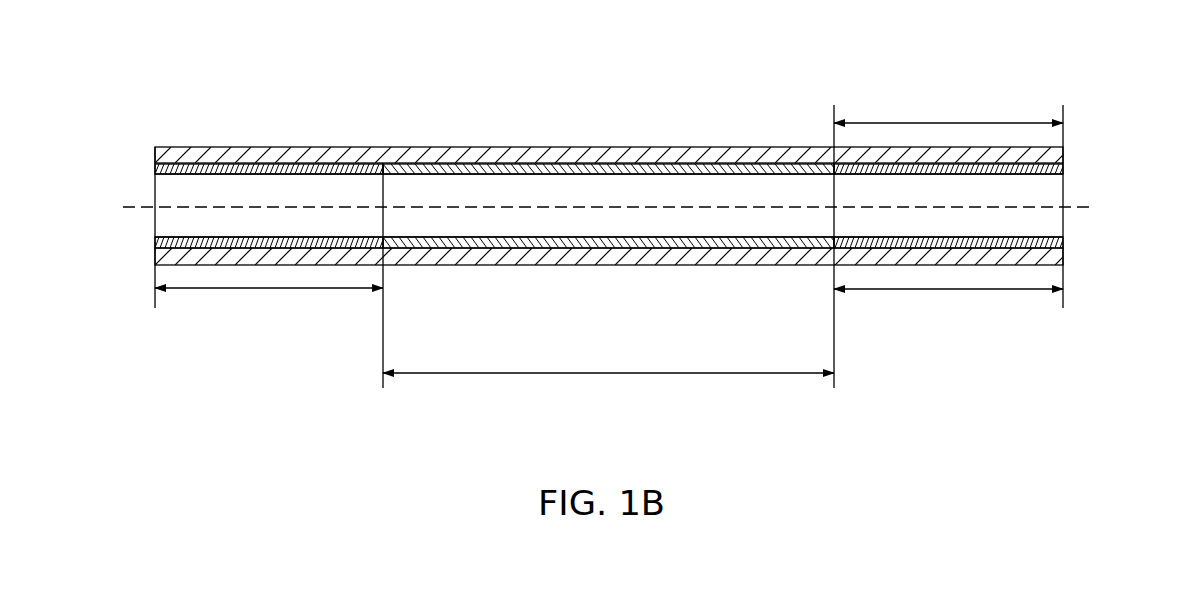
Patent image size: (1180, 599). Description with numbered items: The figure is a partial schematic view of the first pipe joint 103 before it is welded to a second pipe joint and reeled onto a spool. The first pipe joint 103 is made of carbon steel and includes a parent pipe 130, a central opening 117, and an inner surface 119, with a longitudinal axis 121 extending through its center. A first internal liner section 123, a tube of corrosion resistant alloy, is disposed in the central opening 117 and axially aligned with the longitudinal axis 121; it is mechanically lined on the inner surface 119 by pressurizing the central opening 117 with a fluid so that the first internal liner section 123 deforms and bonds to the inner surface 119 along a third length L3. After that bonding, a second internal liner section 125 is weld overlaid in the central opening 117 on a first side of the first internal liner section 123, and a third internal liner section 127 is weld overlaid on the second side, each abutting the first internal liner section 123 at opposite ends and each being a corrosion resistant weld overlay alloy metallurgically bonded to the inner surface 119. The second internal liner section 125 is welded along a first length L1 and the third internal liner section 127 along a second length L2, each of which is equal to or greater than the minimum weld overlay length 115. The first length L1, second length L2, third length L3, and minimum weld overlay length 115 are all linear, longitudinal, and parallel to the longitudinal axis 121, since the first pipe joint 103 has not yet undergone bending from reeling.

The first pipe joint 103 is at (369, 69).
The parent pipe 130 is at (543, 157).
The inner surface 119 is at (855, 164).
The longitudinal axis 121 is at (137, 205).
The central opening 117 is at (1060, 185).
The third internal liner section 127 is at (155, 241).
The first internal liner section 123 is at (590, 250).
The second internal liner section 125 is at (1063, 243).
The minimum weld overlay length 115 is at (927, 123).
The first length L1 is at (948, 289).
The second length L2 is at (255, 288).
The third length L3 is at (598, 373).